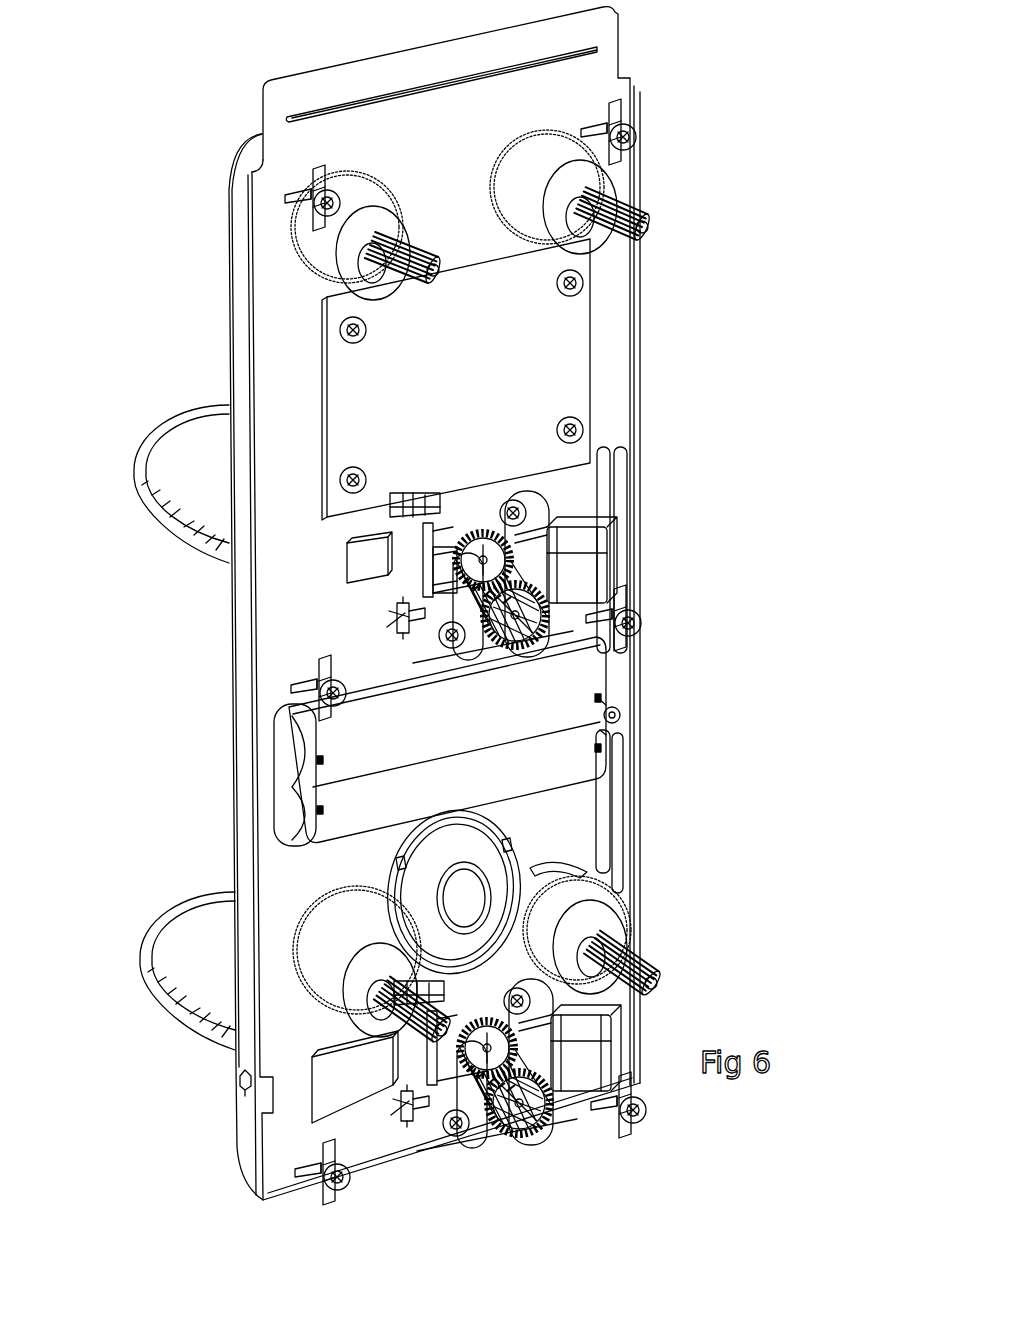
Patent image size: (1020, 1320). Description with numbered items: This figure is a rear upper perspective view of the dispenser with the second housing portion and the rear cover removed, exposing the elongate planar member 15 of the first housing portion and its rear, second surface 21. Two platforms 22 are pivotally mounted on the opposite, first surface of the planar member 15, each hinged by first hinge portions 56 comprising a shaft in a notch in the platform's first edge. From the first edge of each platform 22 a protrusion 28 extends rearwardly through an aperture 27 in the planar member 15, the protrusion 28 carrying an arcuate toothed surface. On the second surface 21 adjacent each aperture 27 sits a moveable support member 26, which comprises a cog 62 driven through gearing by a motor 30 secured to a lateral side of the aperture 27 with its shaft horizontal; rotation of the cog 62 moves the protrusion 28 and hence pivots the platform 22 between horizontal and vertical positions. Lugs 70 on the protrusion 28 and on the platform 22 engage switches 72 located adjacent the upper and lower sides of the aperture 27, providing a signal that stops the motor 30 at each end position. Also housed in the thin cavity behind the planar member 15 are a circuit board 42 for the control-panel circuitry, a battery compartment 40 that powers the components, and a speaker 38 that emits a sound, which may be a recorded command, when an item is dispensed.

The elongate planar member 15 is at (262, 133).
The second surface 21 is at (598, 78).
The platform 22 is at (205, 462).
The circuit board 42 is at (483, 293).
The aperture 27 is at (447, 497).
The protrusion 28 is at (465, 520).
The moveable support member 26 is at (480, 543).
The cog 62 is at (495, 540).
The switch 72 is at (392, 520).
The first hinge portion 56 is at (420, 530).
The lug 70 is at (420, 595).
The motor 30 is at (590, 577).
The battery compartment 40 is at (350, 767).
The speaker 38 is at (447, 863).